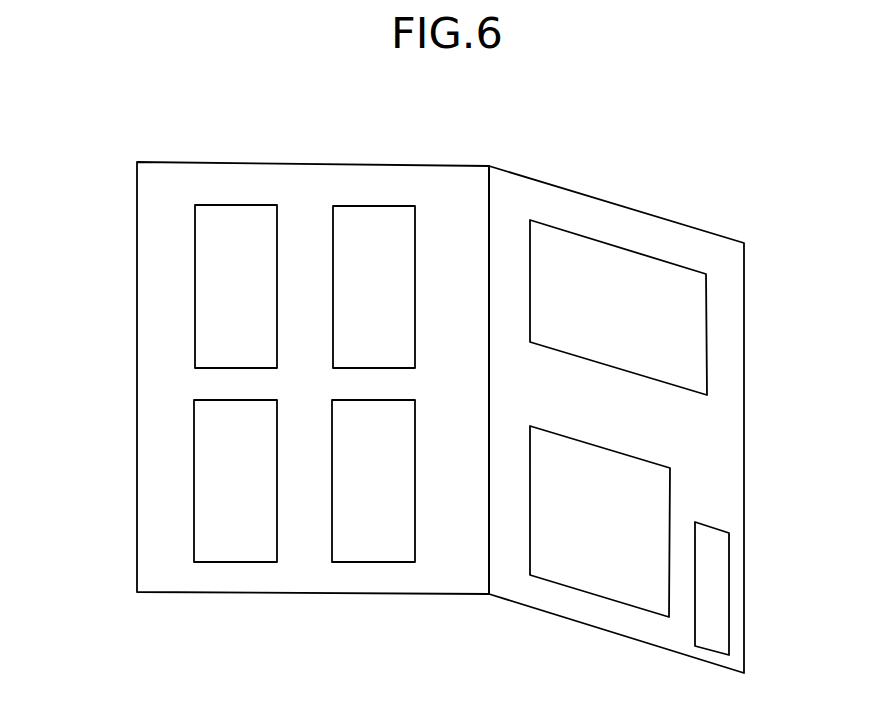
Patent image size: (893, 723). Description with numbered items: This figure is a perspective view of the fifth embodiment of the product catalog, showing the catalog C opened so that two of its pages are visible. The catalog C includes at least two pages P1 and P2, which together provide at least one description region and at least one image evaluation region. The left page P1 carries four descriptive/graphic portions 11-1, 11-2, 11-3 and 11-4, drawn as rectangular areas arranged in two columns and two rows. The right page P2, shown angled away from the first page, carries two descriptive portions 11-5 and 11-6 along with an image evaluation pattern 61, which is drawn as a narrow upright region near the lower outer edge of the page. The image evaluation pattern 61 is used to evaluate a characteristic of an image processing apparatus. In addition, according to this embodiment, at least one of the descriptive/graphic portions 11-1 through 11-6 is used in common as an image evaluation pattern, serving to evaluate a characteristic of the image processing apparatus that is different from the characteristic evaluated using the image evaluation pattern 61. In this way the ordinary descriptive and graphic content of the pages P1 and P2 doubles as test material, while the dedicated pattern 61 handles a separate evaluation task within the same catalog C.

The page P1 is at (137, 250).
The page P2 is at (745, 263).
The catalog C is at (496, 164).
The descriptive/graphic portion 11-1 is at (260, 205).
The descriptive/graphic portion 11-2 is at (402, 206).
The descriptive/graphic portion 11-3 is at (260, 562).
The descriptive/graphic portion 11-4 is at (397, 562).
The descriptive portion 11-5 is at (638, 251).
The descriptive portion 11-6 is at (593, 594).
The image evaluation pattern 61 is at (729, 588).